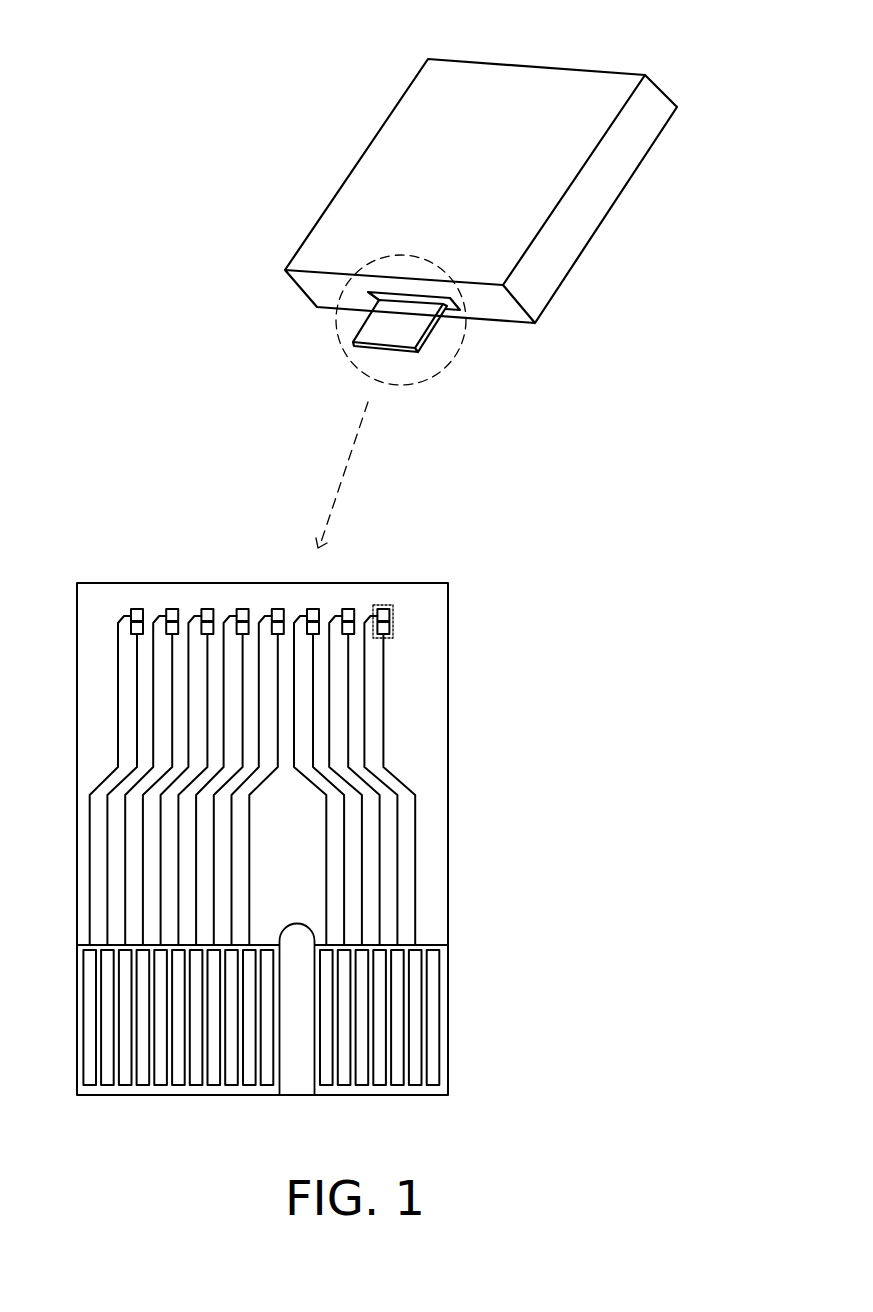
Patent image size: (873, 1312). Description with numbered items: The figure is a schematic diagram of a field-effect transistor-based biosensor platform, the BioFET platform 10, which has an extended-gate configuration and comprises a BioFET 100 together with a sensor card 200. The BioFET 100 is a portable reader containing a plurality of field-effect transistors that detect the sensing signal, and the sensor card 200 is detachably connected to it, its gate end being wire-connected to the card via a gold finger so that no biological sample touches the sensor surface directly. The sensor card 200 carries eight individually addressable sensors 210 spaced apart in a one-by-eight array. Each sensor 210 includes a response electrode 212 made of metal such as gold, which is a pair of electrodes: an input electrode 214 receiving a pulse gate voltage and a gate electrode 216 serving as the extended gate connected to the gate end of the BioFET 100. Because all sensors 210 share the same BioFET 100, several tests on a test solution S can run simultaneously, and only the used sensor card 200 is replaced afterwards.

The BioFET platform 10 is at (58, 36).
The BioFET 100 is at (393, 173).
The sensor card 200 is at (382, 325).
The sensor 210 is at (386, 551).
The response electrode 212 is at (393, 615).
The input electrode 214 is at (393, 627).
The gate electrode 216 is at (453, 602).
The test solution S is at (367, 603).